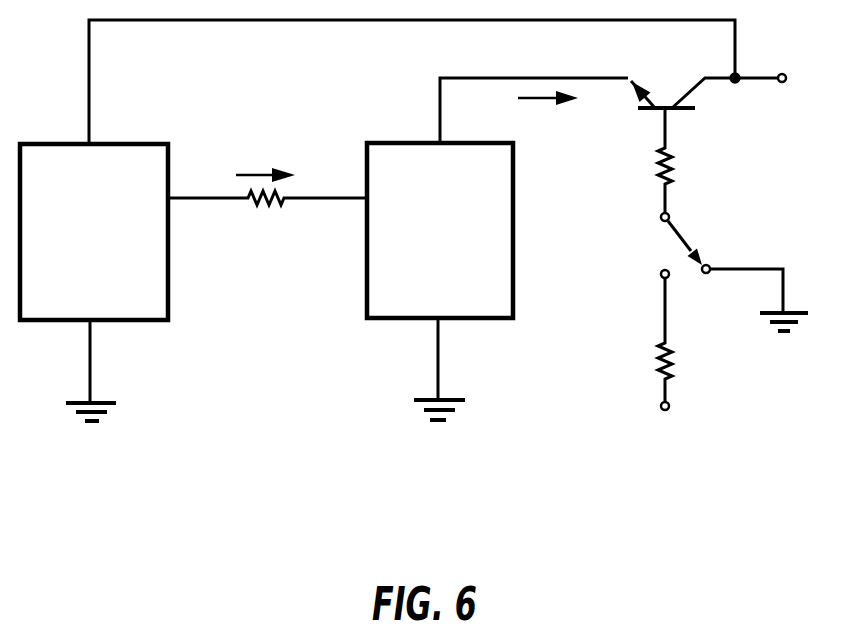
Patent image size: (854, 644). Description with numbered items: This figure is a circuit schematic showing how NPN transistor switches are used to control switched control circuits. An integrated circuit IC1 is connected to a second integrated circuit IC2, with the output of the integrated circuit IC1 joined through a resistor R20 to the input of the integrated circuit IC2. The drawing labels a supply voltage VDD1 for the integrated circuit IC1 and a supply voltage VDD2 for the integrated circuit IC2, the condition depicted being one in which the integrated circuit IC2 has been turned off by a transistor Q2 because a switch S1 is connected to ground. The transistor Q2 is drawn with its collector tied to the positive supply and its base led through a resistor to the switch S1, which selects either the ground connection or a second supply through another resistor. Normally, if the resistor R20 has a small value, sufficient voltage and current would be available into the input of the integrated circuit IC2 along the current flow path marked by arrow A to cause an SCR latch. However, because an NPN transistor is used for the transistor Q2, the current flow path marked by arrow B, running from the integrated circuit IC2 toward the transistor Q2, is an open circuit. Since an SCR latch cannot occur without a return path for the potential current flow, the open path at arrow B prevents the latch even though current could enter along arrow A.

The integrated circuit IC1 is at (94, 282).
The integrated circuit IC2 is at (440, 281).
The resistor R20 is at (267, 215).
The transistor Q2 is at (736, 138).
The switch S1 is at (718, 337).
The arrow A is at (253, 175).
The arrow B is at (530, 98).
The supply voltage VDD1 = +5V VDD1 is at (89, 116).
The supply voltage VDD2 = 0V VDD2 is at (440, 112).